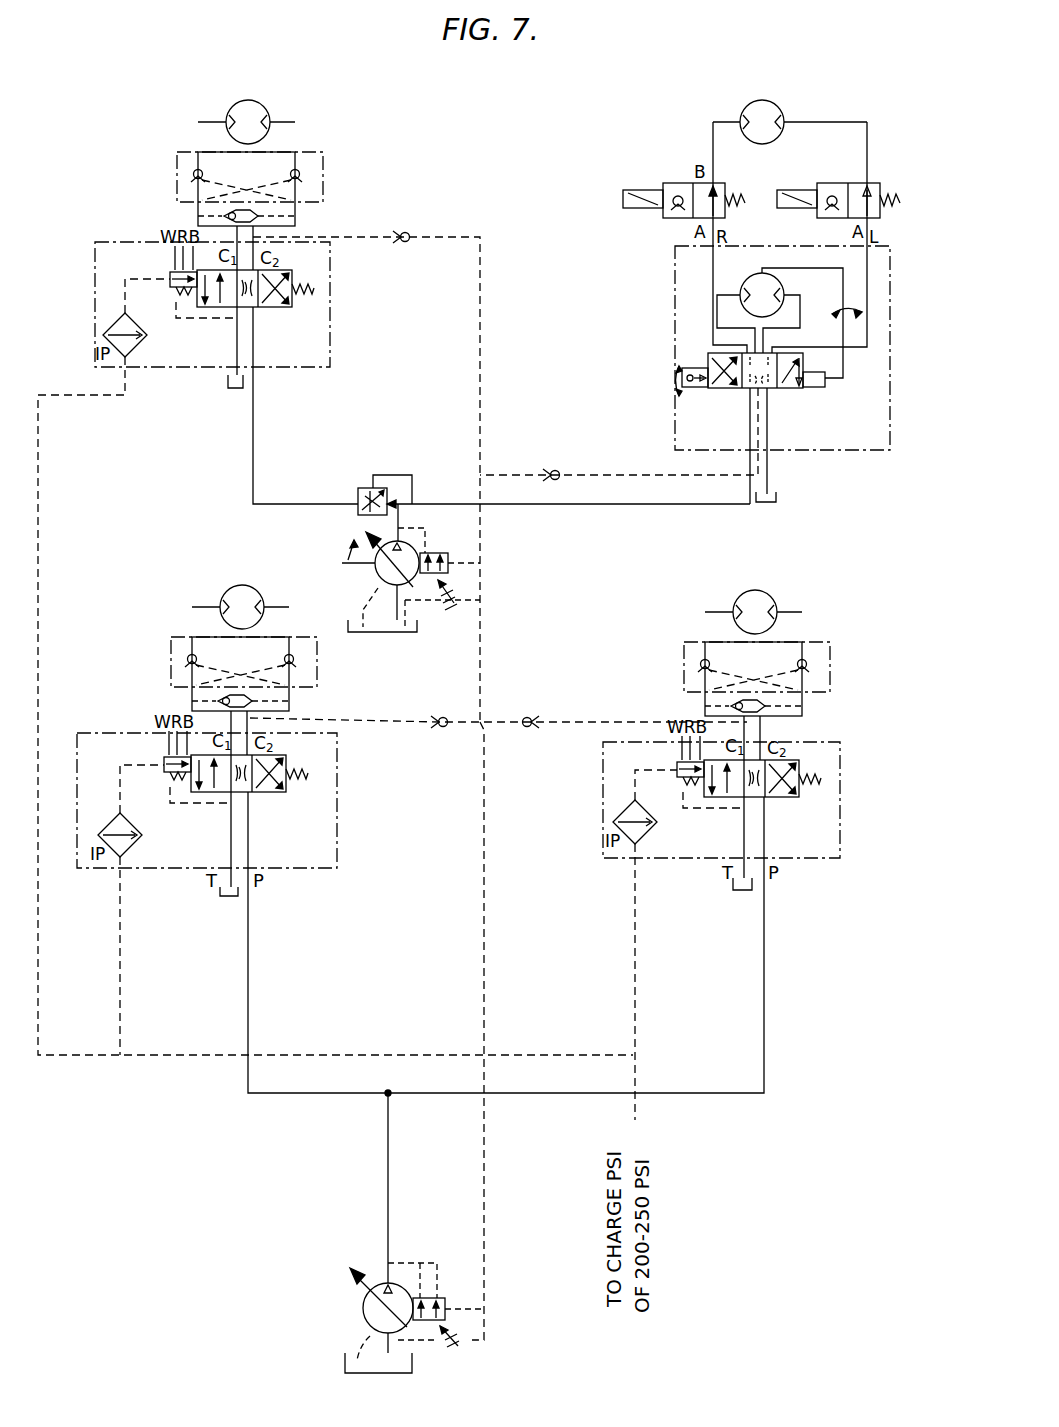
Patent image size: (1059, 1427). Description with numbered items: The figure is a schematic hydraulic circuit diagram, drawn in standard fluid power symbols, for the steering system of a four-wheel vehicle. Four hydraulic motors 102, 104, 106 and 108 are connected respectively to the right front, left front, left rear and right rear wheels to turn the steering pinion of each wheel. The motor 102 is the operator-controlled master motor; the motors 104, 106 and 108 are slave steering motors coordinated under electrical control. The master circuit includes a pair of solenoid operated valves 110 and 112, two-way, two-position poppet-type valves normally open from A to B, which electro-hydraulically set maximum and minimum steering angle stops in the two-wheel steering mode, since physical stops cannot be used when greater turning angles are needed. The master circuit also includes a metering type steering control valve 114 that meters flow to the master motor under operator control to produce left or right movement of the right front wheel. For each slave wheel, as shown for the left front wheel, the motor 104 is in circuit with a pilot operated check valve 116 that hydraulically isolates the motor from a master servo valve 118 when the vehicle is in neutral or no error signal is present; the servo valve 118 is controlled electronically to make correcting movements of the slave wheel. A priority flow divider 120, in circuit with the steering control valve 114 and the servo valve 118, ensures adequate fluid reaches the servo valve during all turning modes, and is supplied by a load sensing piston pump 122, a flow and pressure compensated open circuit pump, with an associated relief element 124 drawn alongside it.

The hydraulic motor 102 is at (779, 110).
The hydraulic motor 104 is at (266, 110).
The hydraulic motor 106 is at (223, 589).
The hydraulic motor 108 is at (773, 601).
The solenoid operated valve 110 is at (853, 184).
The solenoid operated valve 112 is at (669, 219).
The metering type steering control valve 114 is at (675, 316).
The pilot operated check valve 116 is at (323, 173).
The servo valve 118 is at (93, 277).
The priority flow divider 120 is at (357, 513).
The load sensing piston pump 122 is at (377, 577).
The relief valve 124 is at (447, 615).